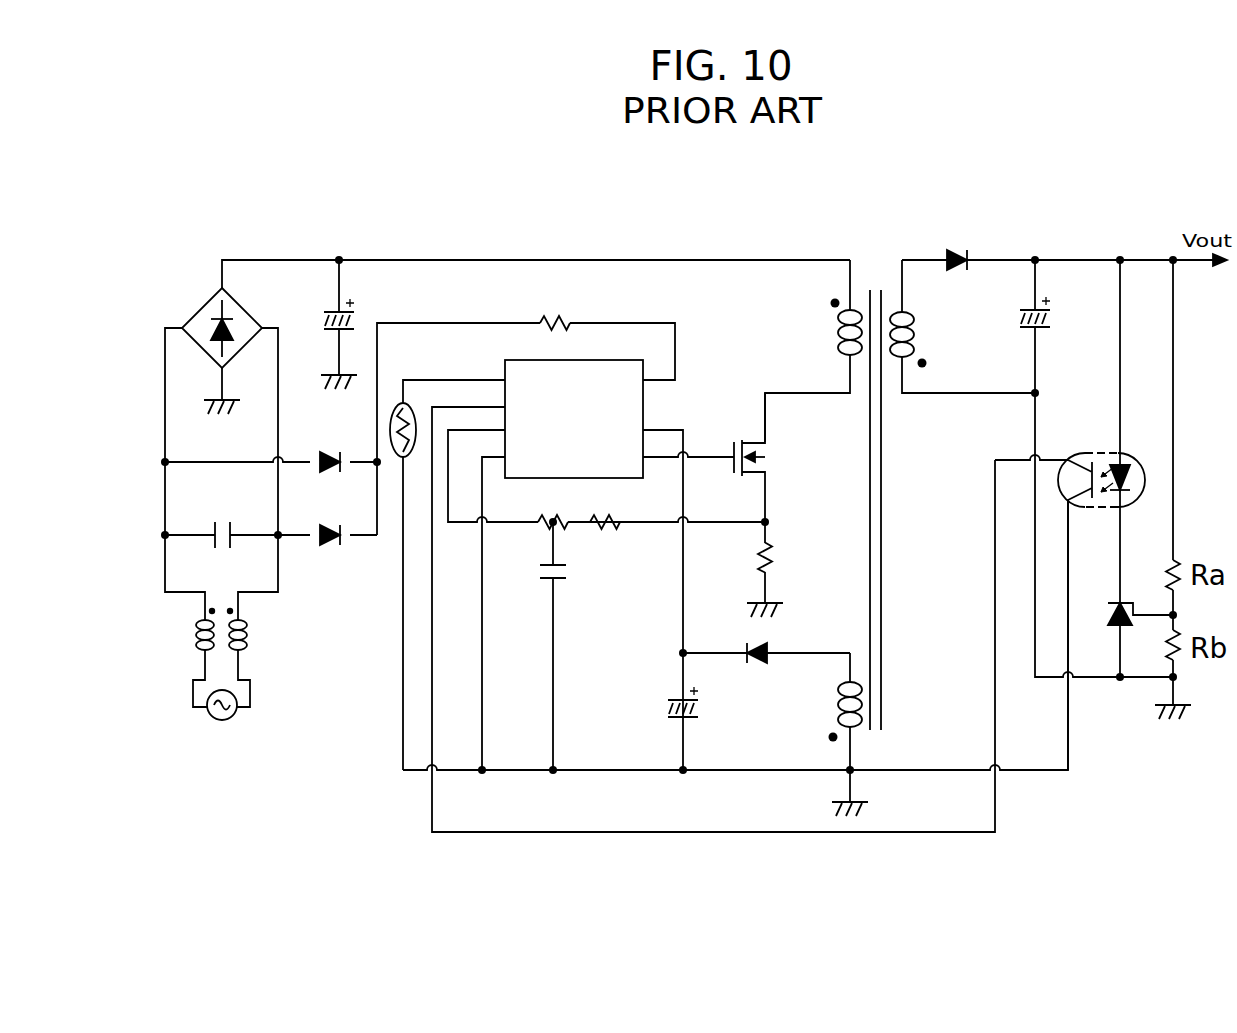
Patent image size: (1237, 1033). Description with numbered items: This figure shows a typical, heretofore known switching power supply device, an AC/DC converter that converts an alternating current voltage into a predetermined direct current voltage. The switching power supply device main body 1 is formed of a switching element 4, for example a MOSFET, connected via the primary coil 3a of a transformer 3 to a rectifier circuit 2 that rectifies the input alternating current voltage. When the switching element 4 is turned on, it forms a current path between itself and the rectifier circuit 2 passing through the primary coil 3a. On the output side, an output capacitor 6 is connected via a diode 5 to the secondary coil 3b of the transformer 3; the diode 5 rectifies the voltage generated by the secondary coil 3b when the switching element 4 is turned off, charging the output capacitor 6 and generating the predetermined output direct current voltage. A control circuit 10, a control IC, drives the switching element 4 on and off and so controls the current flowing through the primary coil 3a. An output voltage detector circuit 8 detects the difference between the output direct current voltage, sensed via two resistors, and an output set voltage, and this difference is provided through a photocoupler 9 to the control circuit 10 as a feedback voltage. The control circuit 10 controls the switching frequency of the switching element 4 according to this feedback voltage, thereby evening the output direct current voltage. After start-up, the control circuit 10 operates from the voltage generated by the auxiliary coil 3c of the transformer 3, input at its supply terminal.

The switching power supply device main body 1 is at (650, 236).
The rectifier circuit 2 is at (240, 302).
The transformer 3 is at (875, 292).
The primary coil 3a is at (827, 333).
The secondary coil 3b is at (920, 331).
The auxiliary coil 3c is at (828, 702).
The switching element 4 is at (770, 452).
The diode 5 is at (979, 250).
The output capacitor 6 is at (1056, 318).
The output voltage detector circuit 8 is at (1113, 601).
The photocoupler 9 is at (1090, 452).
The control circuit 10 is at (604, 366).